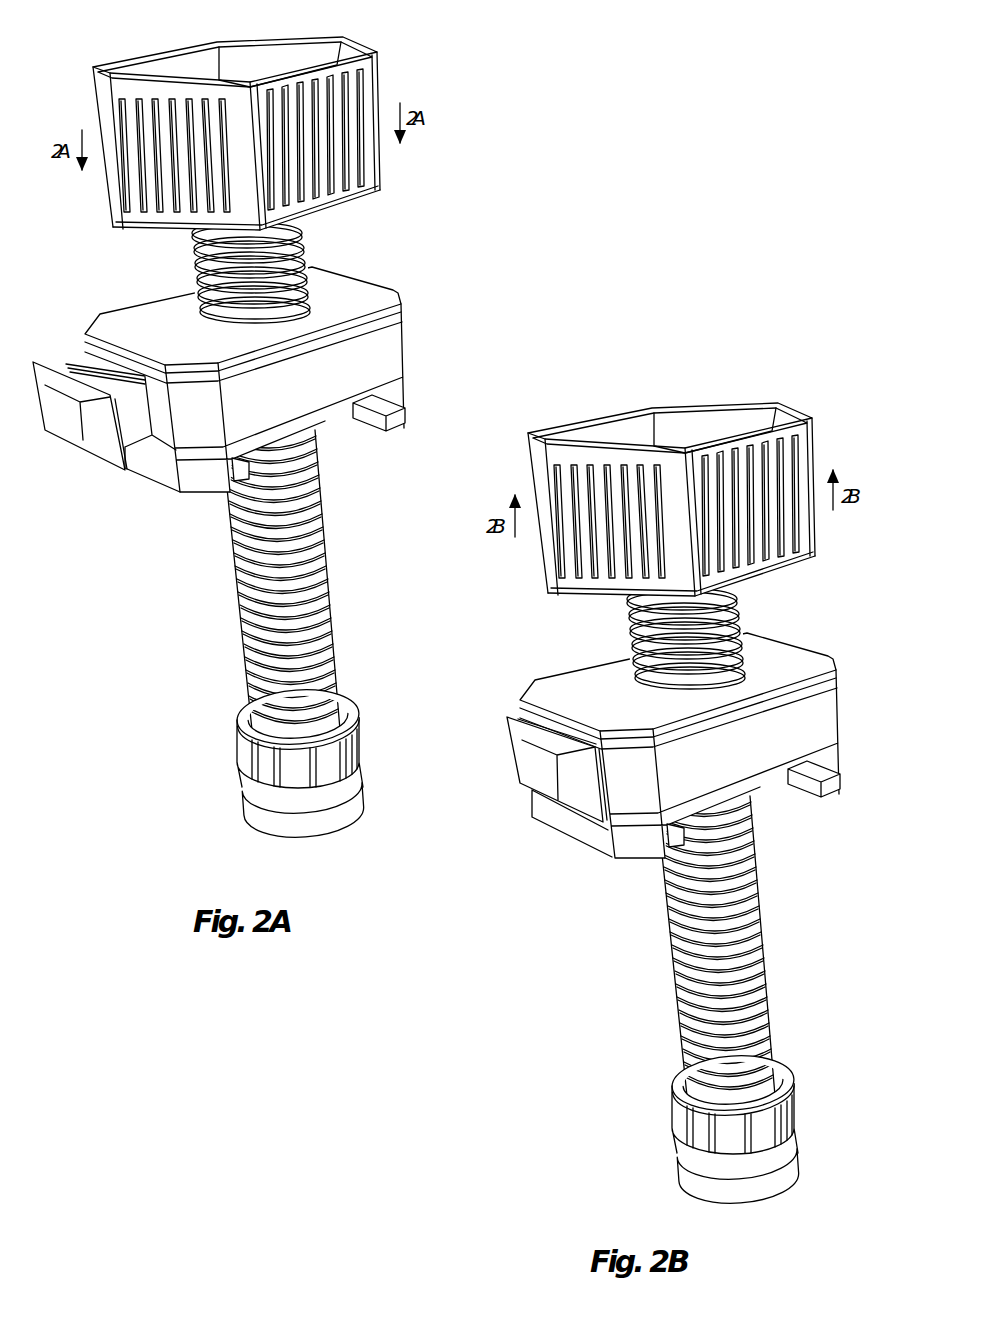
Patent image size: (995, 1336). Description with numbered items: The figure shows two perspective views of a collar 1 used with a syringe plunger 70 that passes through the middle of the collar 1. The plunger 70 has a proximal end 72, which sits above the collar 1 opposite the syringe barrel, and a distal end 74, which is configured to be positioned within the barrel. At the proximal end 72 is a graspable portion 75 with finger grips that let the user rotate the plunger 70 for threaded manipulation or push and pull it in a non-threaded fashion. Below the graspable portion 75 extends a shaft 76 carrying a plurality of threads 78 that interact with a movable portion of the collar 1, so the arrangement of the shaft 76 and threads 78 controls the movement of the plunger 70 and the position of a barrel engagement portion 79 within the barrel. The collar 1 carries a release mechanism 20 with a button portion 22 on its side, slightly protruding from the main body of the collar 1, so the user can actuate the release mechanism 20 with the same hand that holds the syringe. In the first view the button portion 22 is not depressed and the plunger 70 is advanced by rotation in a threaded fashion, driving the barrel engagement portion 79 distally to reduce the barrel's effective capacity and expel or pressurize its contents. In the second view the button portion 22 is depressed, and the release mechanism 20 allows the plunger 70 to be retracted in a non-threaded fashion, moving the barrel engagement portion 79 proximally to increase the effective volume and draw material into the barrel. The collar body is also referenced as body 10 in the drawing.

In FIG. 2A, the collar 1 is at (282, 420).
In FIG. 2B, the collar 1 is at (671, 753).
In FIG. 2A, the base body 10 is at (282, 383).
In FIG. 2B, the base body 10 is at (671, 745).
In FIG. 2A, the release mechanism 20 is at (62, 350).
In FIG. 2B, the release mechanism 20 is at (502, 709).
In FIG. 2A, the button portion 22 is at (72, 437).
In FIG. 2B, the button portion 22 is at (548, 782).
In FIG. 2A, the plunger 70 is at (279, 115).
In FIG. 2B, the plunger 70 is at (694, 447).
In FIG. 2A, the proximal end 72 is at (147, 44).
In FIG. 2B, the proximal end 72 is at (609, 399).
In FIG. 2A, the distal end 74 is at (280, 763).
In FIG. 2B, the distal end 74 is at (707, 1129).
In FIG. 2A, the graspable portion 75 is at (386, 93).
In FIG. 2B, the graspable portion 75 is at (818, 417).
In FIG. 2A, the shaft 76 is at (326, 580).
In FIG. 2B, the shaft 76 is at (755, 946).
In FIG. 2A, the threads 78 is at (327, 603).
In FIG. 2B, the threads 78 is at (767, 977).
In FIG. 2A, the barrel engagement portion 79 is at (379, 771).
In FIG. 2B, the barrel engagement portion 79 is at (814, 1138).